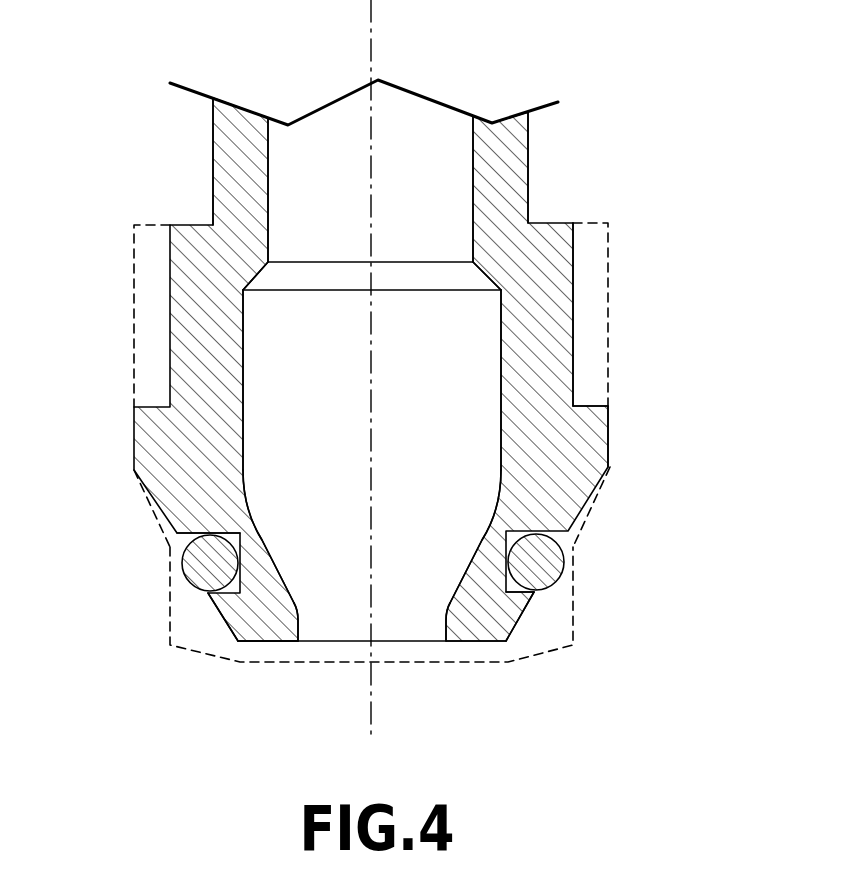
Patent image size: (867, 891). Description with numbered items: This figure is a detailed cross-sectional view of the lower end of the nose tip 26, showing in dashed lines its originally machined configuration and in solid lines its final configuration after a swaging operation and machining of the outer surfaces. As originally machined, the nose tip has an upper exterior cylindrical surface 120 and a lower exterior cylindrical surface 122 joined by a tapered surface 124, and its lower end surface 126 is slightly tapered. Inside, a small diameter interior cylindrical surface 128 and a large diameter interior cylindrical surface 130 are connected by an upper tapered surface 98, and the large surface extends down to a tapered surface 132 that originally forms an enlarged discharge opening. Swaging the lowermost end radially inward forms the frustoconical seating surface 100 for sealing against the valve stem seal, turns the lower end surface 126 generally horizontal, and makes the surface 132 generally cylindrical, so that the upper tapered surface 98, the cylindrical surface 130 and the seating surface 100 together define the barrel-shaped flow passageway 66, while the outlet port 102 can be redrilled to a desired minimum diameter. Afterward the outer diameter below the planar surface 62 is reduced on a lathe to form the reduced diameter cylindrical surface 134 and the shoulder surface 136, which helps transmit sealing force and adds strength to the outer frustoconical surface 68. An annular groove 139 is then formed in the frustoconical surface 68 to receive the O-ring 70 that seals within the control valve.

The nose tip 26 is at (515, 158).
The planar surface 62 is at (187, 225).
The barrel-shaped flow passageway 66 is at (278, 424).
The frustoconical surface 68 is at (522, 617).
The O-ring 70 is at (550, 570).
The upper tapered surface 98 is at (262, 268).
The frustoconical seating surface 100 is at (296, 589).
The outlet port 102 is at (408, 618).
The upper exterior cylindrical surface 120 is at (608, 270).
The lower exterior cylindrical surface 122 is at (580, 552).
The tapered surface 124 is at (147, 508).
The lower end surface 126 is at (480, 642).
The small diameter interior cylindrical surface 128 is at (473, 196).
The large diameter interior cylindrical surface 130 is at (501, 425).
The tapered surface 132 is at (298, 626).
The reduced diameter cylindrical surface 134 is at (573, 322).
The shoulder surface 136 is at (590, 406).
The annular groove 139 is at (180, 533).